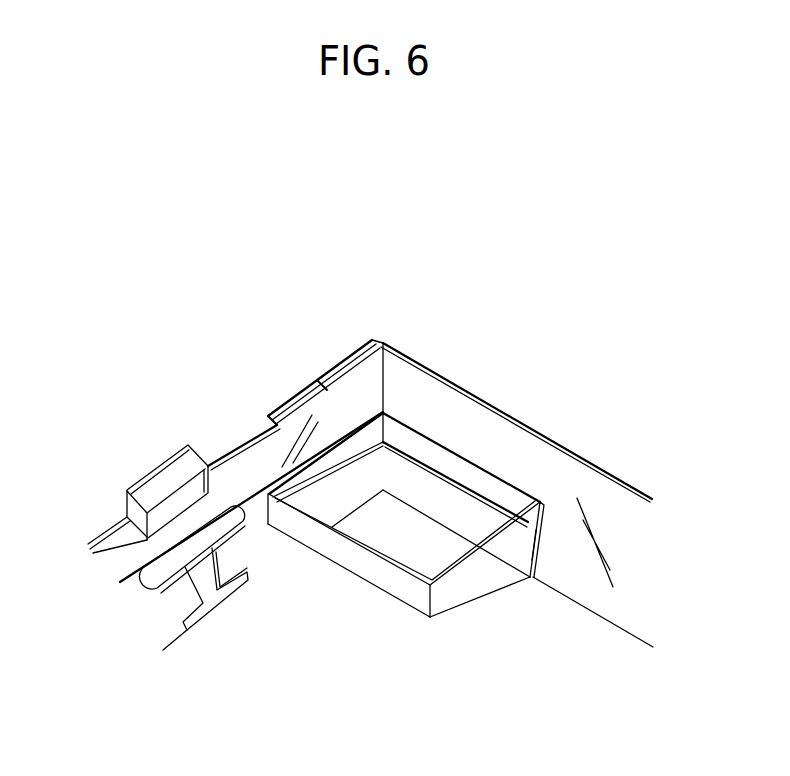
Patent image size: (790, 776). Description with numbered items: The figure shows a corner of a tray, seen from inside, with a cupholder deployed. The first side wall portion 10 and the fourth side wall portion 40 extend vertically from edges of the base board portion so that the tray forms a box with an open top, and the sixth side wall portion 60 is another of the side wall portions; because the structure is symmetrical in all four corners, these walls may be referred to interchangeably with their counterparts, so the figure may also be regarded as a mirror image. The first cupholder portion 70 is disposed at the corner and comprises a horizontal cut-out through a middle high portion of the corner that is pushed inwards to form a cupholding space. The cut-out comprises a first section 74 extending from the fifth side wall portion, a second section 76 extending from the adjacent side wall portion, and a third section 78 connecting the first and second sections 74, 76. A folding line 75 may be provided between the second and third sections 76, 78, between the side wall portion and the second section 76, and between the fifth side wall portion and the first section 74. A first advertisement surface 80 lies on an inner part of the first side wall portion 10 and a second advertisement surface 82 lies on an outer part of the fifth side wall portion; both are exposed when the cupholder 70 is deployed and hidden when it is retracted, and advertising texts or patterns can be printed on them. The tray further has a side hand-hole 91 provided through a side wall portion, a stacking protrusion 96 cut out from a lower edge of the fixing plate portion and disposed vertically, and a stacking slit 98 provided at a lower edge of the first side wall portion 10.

The first side wall portion 10 is at (232, 438).
The fourth side wall portion 40 is at (537, 467).
The sixth side wall portion 60 is at (232, 566).
The first cupholder portion 70 is at (405, 550).
The first section 74 is at (368, 568).
The folding line 75 is at (544, 514).
The second section 76 is at (542, 541).
The third section 78 is at (490, 588).
The first advertisement surface 80 is at (358, 443).
The second advertisement surface 82 is at (383, 490).
The side hand-hole 91 is at (176, 556).
The stacking protrusion 96 is at (162, 488).
The stacking slit 98 is at (215, 607).